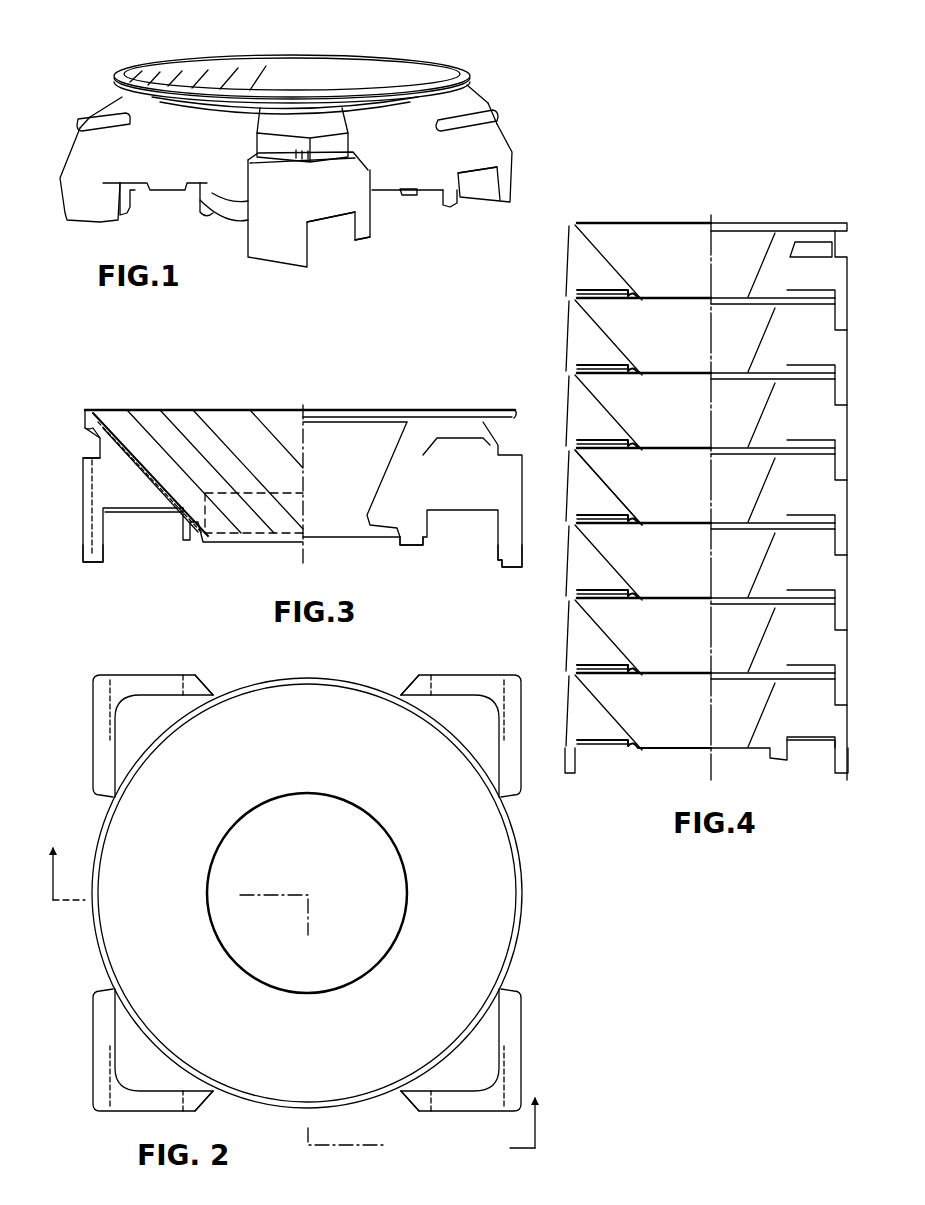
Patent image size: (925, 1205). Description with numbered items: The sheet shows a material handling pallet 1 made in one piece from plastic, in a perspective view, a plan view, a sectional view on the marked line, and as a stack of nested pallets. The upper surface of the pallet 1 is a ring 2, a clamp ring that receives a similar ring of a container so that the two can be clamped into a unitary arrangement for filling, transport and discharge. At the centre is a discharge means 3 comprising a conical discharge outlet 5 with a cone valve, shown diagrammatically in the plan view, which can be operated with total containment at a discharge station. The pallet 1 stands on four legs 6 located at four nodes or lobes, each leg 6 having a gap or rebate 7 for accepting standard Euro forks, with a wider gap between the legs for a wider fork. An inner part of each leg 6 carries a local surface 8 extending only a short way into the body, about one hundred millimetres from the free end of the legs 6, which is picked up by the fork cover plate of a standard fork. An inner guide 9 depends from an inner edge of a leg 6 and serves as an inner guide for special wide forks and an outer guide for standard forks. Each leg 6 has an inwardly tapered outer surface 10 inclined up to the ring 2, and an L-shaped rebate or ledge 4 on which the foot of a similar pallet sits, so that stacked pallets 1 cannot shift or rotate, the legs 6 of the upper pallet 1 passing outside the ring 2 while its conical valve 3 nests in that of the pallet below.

In FIG. 1, the pallet 1 is at (377, 50).
In FIG. 3, the pallet 1 is at (524, 420).
In FIG. 2, the pallet 1 is at (523, 855).
In FIG. 4, the pallet 1 is at (565, 306).
In FIG. 1, the ring 2 is at (470, 70).
In FIG. 3, the ring 2 is at (468, 410).
In FIG. 1, the discharge means 3 is at (235, 196).
In FIG. 3, the discharge means 3 is at (150, 464).
In FIG. 2, the discharge means 3 is at (333, 892).
In FIG. 1, the rebate or ledge 4 is at (78, 116).
In FIG. 3, the rebate or ledge 4 is at (84, 455).
In FIG. 2, the rebate or ledge 4 is at (510, 758).
In FIG. 4, the conical discharge outlet 5 is at (617, 493).
In FIG. 1, the legs 6 is at (80, 212).
In FIG. 3, the legs 6 is at (84, 542).
In FIG. 2, the legs 6 is at (170, 680).
In FIG. 1, the gap or rebate 7 is at (334, 240).
In FIG. 3, the gap or rebate 7 is at (462, 535).
In FIG. 1, the local surface 8 is at (125, 207).
In FIG. 3, the local surface 8 is at (407, 549).
In FIG. 4, the local surface 8 is at (631, 668).
In FIG. 1, the inner guide 9 is at (405, 197).
In FIG. 1, the inwardly tapered outer surface 10 is at (68, 152).